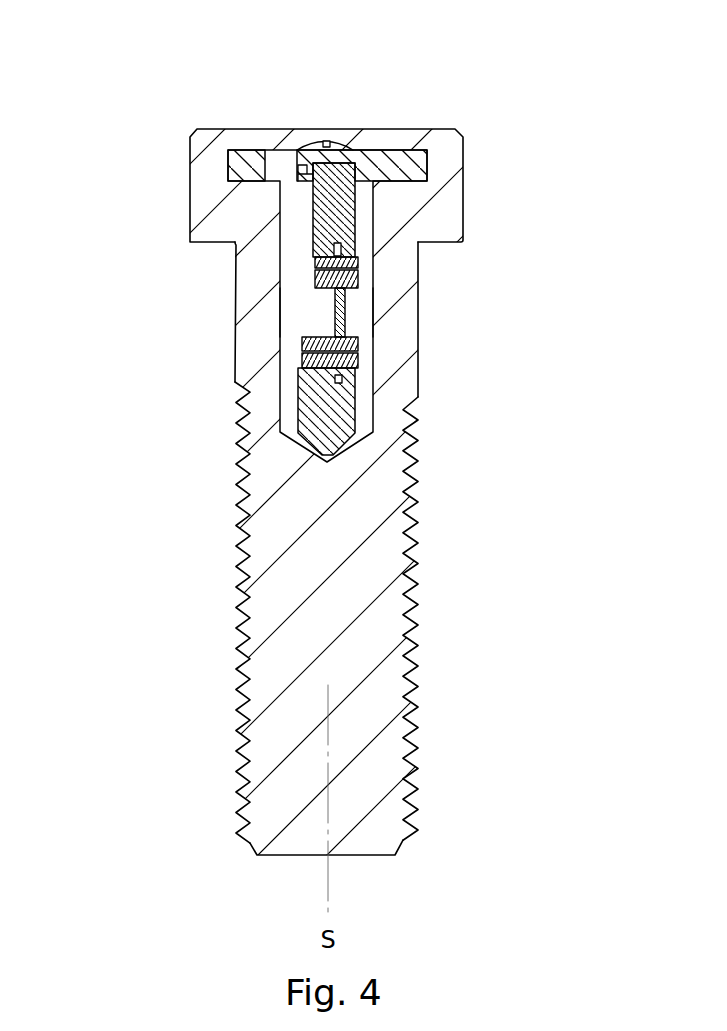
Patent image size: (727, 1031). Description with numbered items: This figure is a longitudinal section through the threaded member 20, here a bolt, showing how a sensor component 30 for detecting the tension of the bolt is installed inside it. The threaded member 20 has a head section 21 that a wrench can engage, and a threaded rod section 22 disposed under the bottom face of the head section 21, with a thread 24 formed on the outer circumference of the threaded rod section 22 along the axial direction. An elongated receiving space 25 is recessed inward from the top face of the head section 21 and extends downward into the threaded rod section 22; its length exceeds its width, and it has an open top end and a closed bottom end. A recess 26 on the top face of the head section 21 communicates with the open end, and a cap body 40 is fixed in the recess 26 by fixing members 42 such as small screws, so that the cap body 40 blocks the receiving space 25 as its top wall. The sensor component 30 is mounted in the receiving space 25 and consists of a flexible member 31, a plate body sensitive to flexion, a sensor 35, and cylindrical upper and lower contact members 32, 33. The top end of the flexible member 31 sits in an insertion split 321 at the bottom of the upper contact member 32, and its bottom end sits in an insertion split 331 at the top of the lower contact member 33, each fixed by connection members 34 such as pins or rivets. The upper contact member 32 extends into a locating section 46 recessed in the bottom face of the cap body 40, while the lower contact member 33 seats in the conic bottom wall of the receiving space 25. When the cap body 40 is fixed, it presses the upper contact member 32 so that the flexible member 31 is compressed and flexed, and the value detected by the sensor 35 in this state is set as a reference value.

The threaded member 20 is at (490, 133).
The head section 21 is at (465, 188).
The threaded rod section 22 is at (428, 670).
The thread 24 is at (238, 663).
The receiving space 25 is at (303, 306).
The recess 26 is at (227, 175).
The sensor component 30 is at (291, 257).
The flexible member 31 is at (332, 322).
The upper contact member 32 is at (332, 208).
The insertion split 321 is at (342, 249).
The lower contact member 33 is at (338, 423).
The insertion split 331 is at (342, 382).
The connection members 34 is at (358, 262).
The sensor 35 is at (348, 313).
The cap body 40 is at (394, 153).
The fixing members 42 is at (341, 144).
The locating section 46 is at (305, 150).